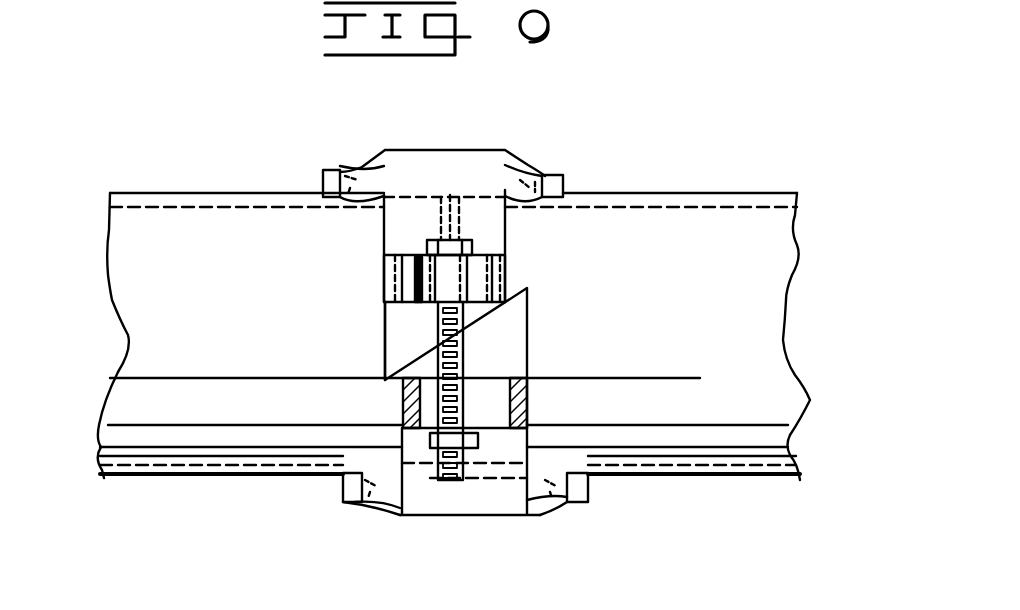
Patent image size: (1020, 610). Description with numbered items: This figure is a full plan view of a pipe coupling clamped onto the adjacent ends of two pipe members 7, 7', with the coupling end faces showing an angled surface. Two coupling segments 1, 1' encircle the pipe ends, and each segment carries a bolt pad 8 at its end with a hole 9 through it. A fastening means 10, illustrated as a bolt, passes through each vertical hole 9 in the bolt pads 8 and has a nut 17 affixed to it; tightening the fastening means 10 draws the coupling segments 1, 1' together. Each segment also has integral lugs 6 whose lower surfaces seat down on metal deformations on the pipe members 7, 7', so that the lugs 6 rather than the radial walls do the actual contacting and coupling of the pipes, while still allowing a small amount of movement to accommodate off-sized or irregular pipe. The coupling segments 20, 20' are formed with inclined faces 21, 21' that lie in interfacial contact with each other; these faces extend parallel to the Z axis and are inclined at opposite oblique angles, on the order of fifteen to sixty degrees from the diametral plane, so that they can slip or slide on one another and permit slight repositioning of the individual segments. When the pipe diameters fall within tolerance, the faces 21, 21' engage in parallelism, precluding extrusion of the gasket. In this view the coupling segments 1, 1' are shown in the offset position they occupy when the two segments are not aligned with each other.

The coupling segment 1 is at (455, 501).
The coupling segment 1' is at (422, 201).
The lug 6 is at (323, 180).
The pipe member 7 is at (222, 335).
The pipe member 7' is at (685, 336).
The bolt pad 8 is at (505, 262).
The hole 9 is at (388, 250).
The fastening means 10 is at (437, 312).
The nut 17 is at (433, 442).
The coupling segment 20 is at (496, 358).
The coupling segment 20' is at (328, 274).
The inclined face 21 is at (549, 269).
The inclined face 21' is at (334, 357).